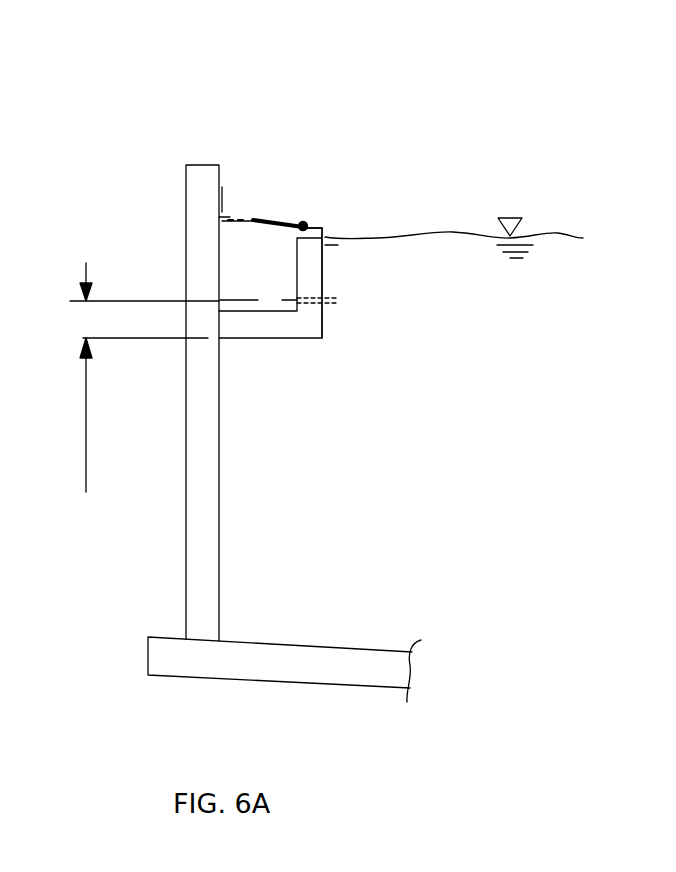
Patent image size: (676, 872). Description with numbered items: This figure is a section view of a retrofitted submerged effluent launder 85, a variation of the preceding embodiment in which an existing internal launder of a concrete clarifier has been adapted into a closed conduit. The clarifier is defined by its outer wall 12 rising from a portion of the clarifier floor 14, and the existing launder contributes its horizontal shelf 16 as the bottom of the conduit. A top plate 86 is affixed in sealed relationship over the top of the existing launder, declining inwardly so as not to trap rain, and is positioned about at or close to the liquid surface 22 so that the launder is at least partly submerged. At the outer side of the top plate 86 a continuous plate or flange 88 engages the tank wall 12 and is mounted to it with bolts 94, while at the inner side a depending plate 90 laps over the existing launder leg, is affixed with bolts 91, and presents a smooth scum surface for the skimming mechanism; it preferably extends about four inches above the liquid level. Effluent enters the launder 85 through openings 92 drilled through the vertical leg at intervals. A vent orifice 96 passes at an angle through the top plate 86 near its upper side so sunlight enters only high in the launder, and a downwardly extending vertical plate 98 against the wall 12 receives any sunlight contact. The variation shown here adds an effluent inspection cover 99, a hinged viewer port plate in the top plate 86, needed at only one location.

The outer wall 12 is at (186, 178).
The clarifier floor 14 is at (357, 662).
The horizontal shelf 16 is at (272, 340).
The liquid surface 22 is at (520, 215).
The retrofitted submerged effluent launder 85 is at (341, 59).
The top plate 86 is at (322, 224).
The plate or flange 88 is at (225, 217).
The depending plate 90 is at (323, 228).
The bolts 91 is at (325, 245).
The openings 92 is at (330, 302).
The bolts 94 is at (230, 217).
The vent orifice 96 is at (237, 218).
The vertical plate 98 is at (222, 240).
The effluent inspection cover 99 is at (280, 220).